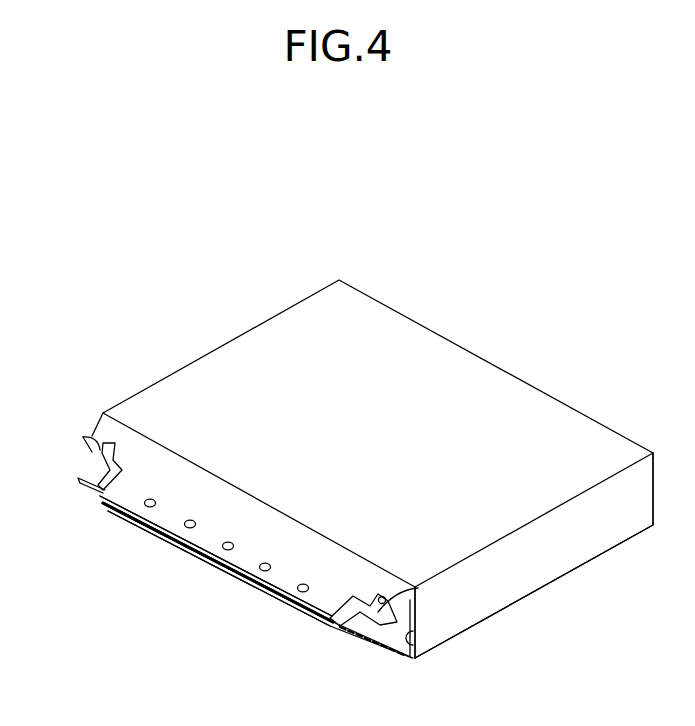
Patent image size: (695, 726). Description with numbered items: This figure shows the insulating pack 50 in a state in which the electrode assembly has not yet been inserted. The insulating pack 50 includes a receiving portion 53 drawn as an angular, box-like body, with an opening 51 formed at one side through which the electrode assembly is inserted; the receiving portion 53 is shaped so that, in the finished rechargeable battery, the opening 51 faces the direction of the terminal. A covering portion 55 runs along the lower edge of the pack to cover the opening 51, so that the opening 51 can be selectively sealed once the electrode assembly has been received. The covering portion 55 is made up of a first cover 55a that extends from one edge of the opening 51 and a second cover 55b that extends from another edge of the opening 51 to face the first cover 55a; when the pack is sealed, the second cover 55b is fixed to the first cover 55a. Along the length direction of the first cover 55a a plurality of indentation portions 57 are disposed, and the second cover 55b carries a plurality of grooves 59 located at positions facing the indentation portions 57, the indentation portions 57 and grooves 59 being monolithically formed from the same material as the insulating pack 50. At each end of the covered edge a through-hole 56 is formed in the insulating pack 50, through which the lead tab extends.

The insulating pack 50 is at (448, 321).
The opening 51 is at (420, 653).
The receiving portion 53 is at (560, 556).
The covering portion 55 is at (252, 673).
The first cover 55a is at (277, 606).
The second cover 55b is at (242, 585).
The through-hole 56 is at (83, 437).
The indentation portions 57 is at (146, 506).
The grooves 59 is at (176, 542).